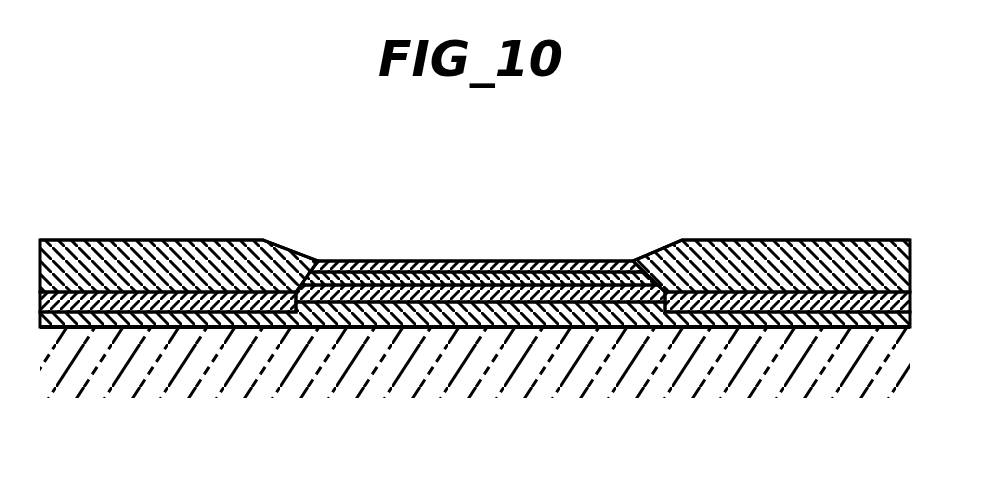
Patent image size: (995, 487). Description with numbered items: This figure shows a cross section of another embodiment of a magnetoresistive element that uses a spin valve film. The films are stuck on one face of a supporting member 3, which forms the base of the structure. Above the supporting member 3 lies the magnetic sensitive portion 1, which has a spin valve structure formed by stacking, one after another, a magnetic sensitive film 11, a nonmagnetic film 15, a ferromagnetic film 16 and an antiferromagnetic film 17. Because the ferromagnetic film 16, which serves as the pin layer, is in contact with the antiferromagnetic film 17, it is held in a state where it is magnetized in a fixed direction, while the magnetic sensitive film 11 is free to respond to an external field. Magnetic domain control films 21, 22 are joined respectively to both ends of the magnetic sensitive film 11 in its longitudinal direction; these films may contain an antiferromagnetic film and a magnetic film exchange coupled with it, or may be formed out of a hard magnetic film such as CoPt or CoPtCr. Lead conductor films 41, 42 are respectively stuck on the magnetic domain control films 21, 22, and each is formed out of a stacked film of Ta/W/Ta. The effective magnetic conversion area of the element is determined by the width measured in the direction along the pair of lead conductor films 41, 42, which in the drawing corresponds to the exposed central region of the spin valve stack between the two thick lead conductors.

The magnetic sensitive portion 1 is at (579, 234).
The supporting member 3 is at (651, 368).
The magnetic sensitive film 11 is at (478, 316).
The nonmagnetic film 15 is at (357, 296).
The ferromagnetic film 16 is at (365, 280).
The antiferromagnetic film 17 is at (467, 266).
The magnetic domain control film 21 is at (121, 302).
The magnetic domain control film 22 is at (815, 302).
The lead conductor film 41 is at (150, 258).
The lead conductor film 42 is at (805, 258).